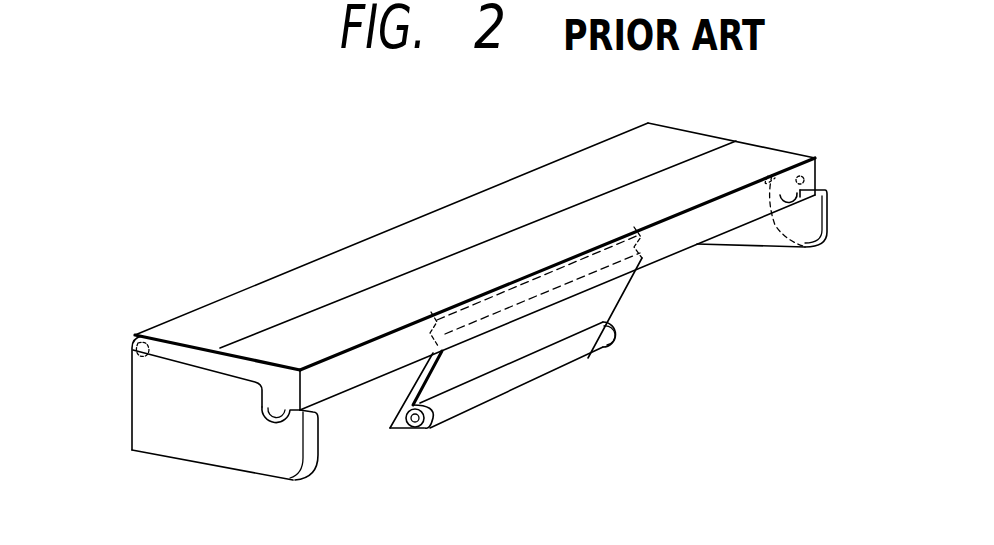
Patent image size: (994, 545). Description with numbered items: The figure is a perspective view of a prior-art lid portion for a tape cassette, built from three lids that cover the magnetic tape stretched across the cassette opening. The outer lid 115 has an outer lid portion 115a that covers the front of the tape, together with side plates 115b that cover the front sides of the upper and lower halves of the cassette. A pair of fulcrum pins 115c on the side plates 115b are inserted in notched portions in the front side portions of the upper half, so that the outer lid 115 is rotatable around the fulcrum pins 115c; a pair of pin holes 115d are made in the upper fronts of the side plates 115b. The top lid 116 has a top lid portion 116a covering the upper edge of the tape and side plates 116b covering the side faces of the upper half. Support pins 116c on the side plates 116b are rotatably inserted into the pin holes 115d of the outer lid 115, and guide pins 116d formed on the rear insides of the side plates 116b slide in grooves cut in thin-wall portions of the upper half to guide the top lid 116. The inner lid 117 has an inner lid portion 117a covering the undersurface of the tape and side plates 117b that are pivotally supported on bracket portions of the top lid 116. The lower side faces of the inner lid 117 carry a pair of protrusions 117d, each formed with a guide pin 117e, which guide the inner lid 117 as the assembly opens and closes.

The outer lid 115 is at (471, 341).
The outer lid portion 115a is at (132, 442).
The side plates 115b is at (188, 453).
The fulcrum pins 115c is at (794, 248).
The pin holes 115d is at (98, 321).
The top lid 116 is at (506, 257).
The top lid portion 116a is at (375, 268).
The side plates 116b is at (275, 378).
The support pins 116c is at (147, 347).
The guide pins 116d is at (812, 176).
The inner lid 117 is at (551, 360).
The inner lid portion 117a is at (555, 336).
The side plates 117b is at (437, 372).
The protrusions 117d is at (399, 431).
The guide pins 117e is at (423, 430).